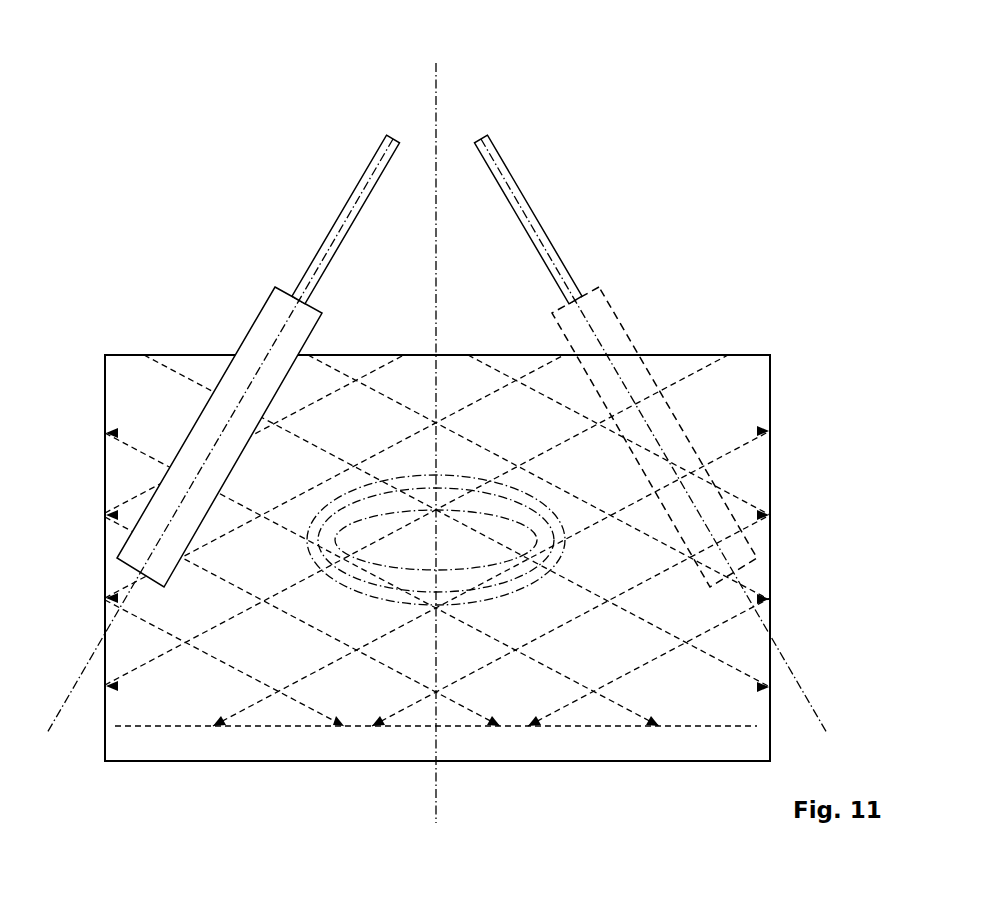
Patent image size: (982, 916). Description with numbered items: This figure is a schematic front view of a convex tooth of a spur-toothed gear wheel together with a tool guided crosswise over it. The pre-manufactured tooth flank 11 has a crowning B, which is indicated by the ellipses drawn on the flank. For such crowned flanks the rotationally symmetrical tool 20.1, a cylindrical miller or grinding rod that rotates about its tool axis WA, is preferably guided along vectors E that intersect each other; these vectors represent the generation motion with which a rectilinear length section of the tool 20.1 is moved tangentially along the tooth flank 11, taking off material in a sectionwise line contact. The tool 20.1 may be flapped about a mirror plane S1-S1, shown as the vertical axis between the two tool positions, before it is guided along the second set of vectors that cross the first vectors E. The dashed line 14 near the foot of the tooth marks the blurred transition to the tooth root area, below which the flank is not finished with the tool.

The tooth flank 11 is at (771, 373).
The dashed line 14 is at (690, 726).
The rotationally symmetrical tool 20.1 is at (252, 326).
The crowning B is at (513, 593).
The vectors E is at (612, 702).
The mirror plane S1 is at (434, 442).
The tool axis WA is at (444, 449).